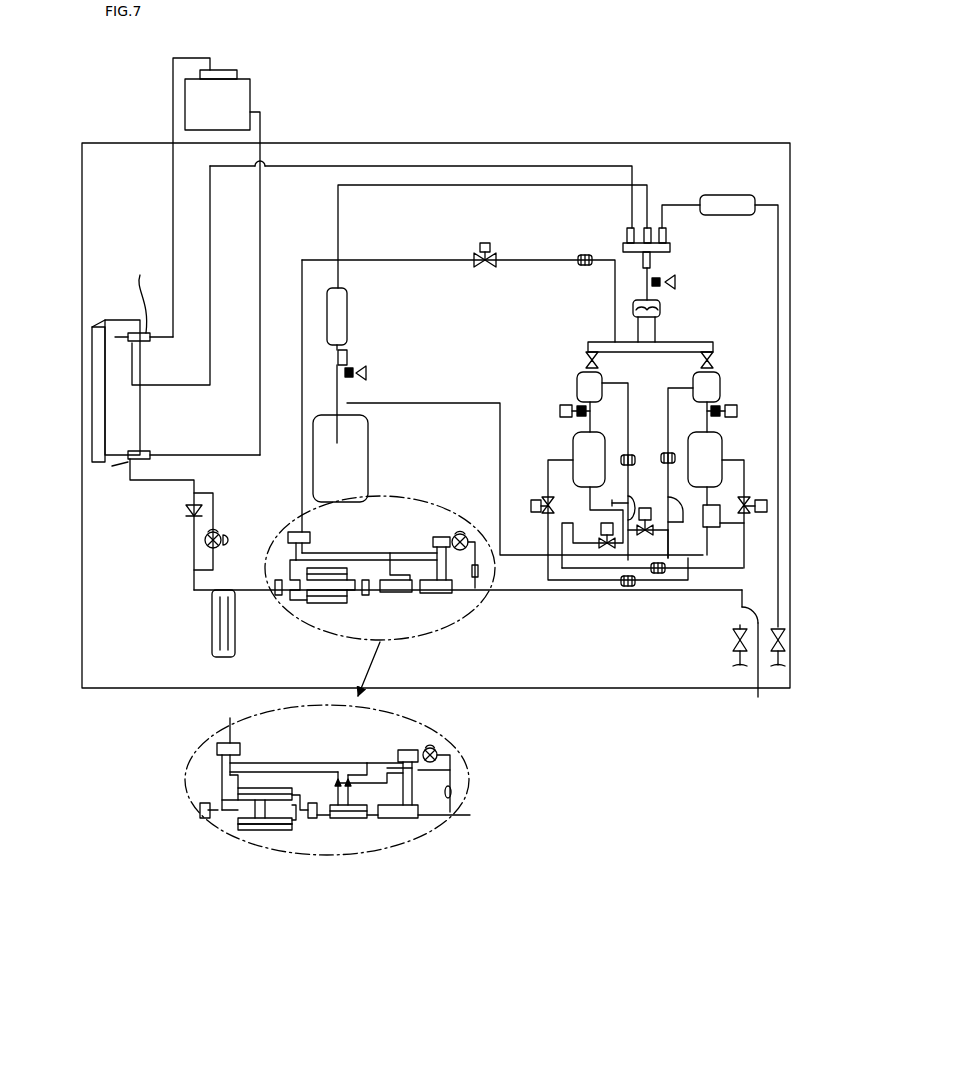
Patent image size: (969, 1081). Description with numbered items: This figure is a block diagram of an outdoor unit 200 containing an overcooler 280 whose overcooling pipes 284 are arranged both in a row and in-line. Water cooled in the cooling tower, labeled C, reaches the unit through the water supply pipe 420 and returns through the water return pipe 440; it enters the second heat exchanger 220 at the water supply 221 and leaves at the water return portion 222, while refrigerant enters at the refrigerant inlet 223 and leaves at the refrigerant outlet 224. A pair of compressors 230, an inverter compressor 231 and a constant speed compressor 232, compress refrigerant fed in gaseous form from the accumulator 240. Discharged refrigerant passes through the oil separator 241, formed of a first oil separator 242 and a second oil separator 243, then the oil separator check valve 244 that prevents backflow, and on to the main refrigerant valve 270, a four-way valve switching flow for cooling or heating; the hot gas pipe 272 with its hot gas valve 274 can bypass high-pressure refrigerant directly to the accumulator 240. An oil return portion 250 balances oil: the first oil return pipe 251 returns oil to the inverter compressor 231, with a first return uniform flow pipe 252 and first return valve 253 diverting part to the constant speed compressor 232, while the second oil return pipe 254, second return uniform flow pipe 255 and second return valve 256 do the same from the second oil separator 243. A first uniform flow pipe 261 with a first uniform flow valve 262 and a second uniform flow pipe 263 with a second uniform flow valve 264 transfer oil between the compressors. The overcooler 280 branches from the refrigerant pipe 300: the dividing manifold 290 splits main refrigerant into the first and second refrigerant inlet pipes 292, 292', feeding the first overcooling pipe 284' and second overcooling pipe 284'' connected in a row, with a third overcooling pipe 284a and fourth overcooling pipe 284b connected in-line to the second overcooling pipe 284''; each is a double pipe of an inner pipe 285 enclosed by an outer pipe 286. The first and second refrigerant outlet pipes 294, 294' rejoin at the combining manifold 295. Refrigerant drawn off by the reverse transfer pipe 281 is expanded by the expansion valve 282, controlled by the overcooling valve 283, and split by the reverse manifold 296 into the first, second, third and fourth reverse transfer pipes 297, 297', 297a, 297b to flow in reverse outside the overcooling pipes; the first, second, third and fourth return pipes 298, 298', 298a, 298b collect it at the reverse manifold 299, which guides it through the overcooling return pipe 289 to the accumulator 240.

The outdoor unit 200 is at (794, 145).
The compressor C is at (243, 92).
The water supply pipe 420 is at (172, 148).
The water return pipe 440 is at (172, 168).
The second heat exchanger 220 is at (105, 375).
The water supply 221 is at (128, 455).
The water return portion 222 is at (146, 330).
The refrigerant inlet 223 is at (115, 337).
The refrigerant outlet 224 is at (112, 466).
The accumulator 240 is at (325, 466).
The hot gas pipe 272 is at (398, 260).
The hot gas valve 274 is at (485, 270).
The overcooling return pipe 289 is at (302, 494).
The main refrigerant valve 270 is at (678, 248).
The oil separator check valve 244 is at (660, 352).
The oil separator 241 is at (729, 461).
The first oil separator 242 is at (605, 383).
The second oil separator 243 is at (722, 388).
The compressors 230 is at (727, 455).
The inverter compressor 231 is at (605, 445).
The constant speed compressor 232 is at (712, 470).
The first uniform flow pipe 261 is at (548, 462).
The first uniform flow valve 262 is at (532, 500).
The second uniform flow pipe 263 is at (745, 546).
The second uniform flow valve 264 is at (768, 508).
The oil return portion 250 is at (631, 586).
The first oil return pipe 251 is at (628, 548).
The first return uniform flow pipe 252 is at (721, 566).
The first return valve 253 is at (647, 530).
The second oil return pipe 254 is at (683, 512).
The second return uniform flow pipe 255 is at (578, 547).
The second return valve 256 is at (603, 548).
The refrigerant pipe 300 is at (160, 803).
The overcooler 280 is at (317, 613).
The reverse transfer pipe 281 is at (450, 785).
The expansion valve 282 is at (453, 792).
The overcooling valve 283 is at (436, 746).
The overcooling pipe 284 is at (349, 879).
The first overcooling pipe 284' is at (318, 863).
The second overcooling pipe 284'' is at (282, 869).
The third overcooling pipe 284a is at (365, 822).
The fourth overcooling pipe 284b is at (414, 864).
The inner pipe 285 is at (262, 832).
The outer pipe 286 is at (342, 790).
The dividing manifold 290 is at (205, 820).
The first refrigerant inlet pipe 292 is at (227, 843).
The second refrigerant inlet pipe 292' is at (208, 786).
The first refrigerant outlet pipe 294 is at (343, 835).
The second refrigerant outlet pipe 294' is at (318, 777).
The combining manifold 295 is at (352, 806).
The reverse manifold 296 is at (410, 750).
The first reverse transfer pipe 297 is at (402, 715).
The second reverse transfer pipe 297' is at (391, 711).
The third reverse transfer pipe 297a is at (450, 762).
The fourth reverse transfer pipe 297b is at (455, 770).
The first return pipe 298 is at (182, 736).
The second return pipe 298' is at (177, 762).
The third return pipe 298a is at (242, 772).
The fourth return pipe 298b is at (290, 766).
The reverse manifold 299 is at (220, 762).